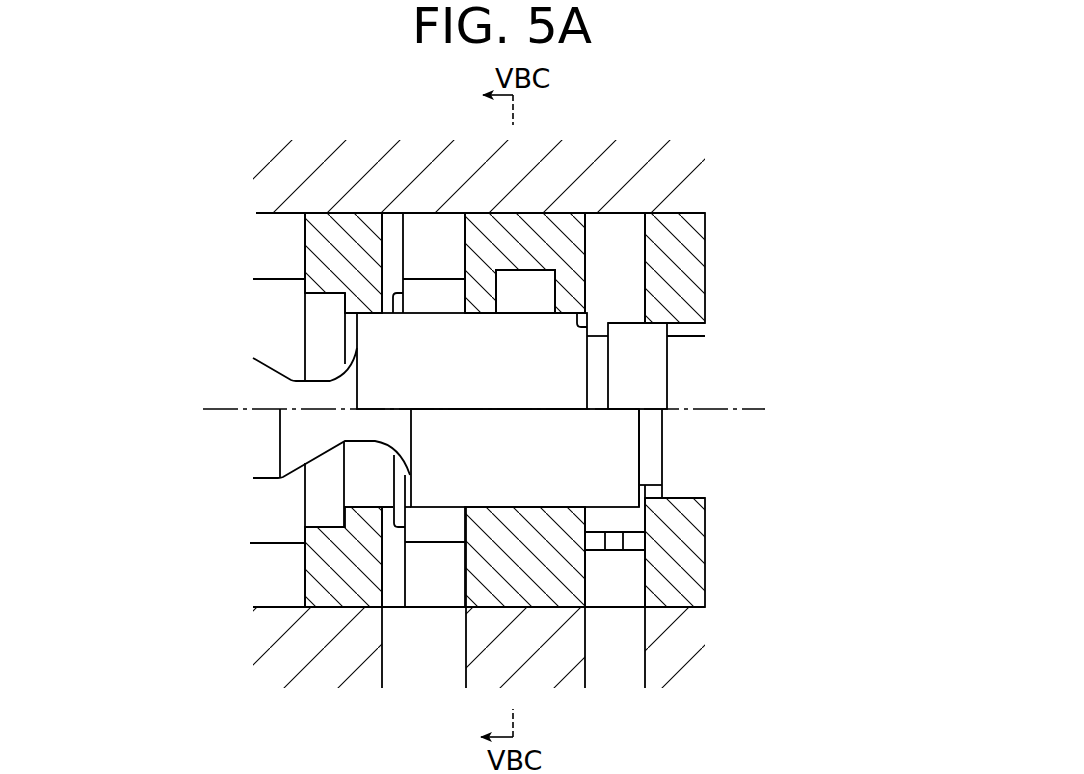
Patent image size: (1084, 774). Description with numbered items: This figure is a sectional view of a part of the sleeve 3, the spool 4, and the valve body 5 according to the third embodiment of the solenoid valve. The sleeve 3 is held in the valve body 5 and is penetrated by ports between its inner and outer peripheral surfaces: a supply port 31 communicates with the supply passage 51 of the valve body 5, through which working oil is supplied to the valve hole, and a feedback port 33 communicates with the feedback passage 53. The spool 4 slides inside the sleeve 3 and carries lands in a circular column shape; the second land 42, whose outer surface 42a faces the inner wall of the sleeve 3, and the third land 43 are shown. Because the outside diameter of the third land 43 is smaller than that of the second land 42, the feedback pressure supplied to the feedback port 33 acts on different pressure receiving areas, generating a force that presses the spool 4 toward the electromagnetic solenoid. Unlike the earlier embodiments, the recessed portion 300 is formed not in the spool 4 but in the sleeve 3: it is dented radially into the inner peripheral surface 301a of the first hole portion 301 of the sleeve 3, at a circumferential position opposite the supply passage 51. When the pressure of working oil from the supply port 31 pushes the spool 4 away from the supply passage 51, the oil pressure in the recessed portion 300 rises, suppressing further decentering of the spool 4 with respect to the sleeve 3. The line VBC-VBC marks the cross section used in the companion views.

The sleeve 3 is at (677, 258).
The spool 4 is at (331, 356).
The valve body 5 is at (312, 672).
The supply port 31 is at (425, 595).
The feedback port 33 is at (622, 593).
The second land 42 is at (485, 374).
The outer peripheral surface of sleeve 42a is at (513, 312).
The third land 43 is at (652, 378).
The supply passage 51 is at (403, 670).
The feedback passage 53 is at (601, 670).
The recessed portion 300 is at (541, 282).
The first hole portion 301 is at (428, 290).
The inner peripheral surface 301a is at (588, 320).